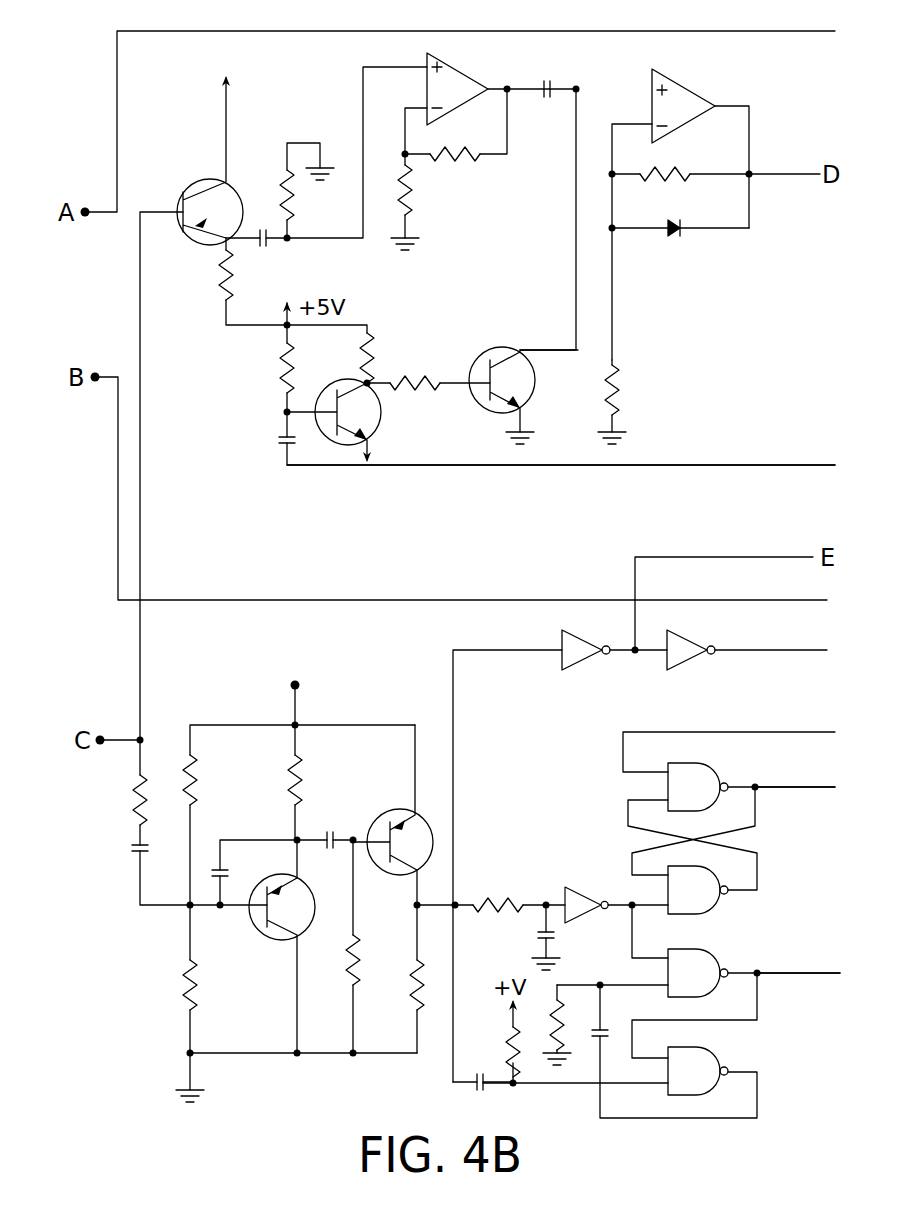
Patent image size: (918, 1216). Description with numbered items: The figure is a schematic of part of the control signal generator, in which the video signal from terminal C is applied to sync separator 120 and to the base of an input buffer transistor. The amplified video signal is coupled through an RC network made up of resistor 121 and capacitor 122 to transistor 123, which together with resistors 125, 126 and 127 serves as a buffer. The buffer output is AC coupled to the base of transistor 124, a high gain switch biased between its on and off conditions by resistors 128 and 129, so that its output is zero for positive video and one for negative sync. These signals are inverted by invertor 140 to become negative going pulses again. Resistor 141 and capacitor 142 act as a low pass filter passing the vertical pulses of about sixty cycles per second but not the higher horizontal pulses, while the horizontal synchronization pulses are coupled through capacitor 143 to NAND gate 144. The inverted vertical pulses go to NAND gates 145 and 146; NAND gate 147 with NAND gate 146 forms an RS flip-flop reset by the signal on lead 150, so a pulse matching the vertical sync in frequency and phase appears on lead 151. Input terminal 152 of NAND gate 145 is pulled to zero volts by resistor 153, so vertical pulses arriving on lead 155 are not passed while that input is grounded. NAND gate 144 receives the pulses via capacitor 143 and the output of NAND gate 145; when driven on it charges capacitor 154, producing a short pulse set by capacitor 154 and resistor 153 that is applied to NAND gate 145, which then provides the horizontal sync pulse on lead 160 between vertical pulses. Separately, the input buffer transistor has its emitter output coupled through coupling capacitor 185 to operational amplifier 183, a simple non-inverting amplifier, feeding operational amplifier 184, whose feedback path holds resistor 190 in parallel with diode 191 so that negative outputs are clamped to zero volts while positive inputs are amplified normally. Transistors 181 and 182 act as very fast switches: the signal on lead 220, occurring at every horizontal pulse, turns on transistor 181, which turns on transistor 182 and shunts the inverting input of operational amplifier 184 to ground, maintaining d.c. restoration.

The sync separator 120 is at (360, 715).
The resistor 121 is at (132, 795).
The capacitor 122 is at (135, 848).
The transistor 123 is at (276, 892).
The transistor 124 is at (400, 809).
The resistor 125 is at (201, 782).
The resistor 126 is at (183, 983).
The resistor 127 is at (306, 776).
The resistor 128 is at (361, 951).
The resistor 129 is at (412, 1000).
The invertor 140 is at (584, 886).
The resistor 141 is at (482, 900).
The capacitor 142 is at (538, 935).
The capacitor 143 is at (472, 1091).
The NAND gate 144 is at (719, 1061).
The NAND gate 145 is at (718, 956).
The NAND gate 146 is at (721, 905).
The NAND gate 147 is at (713, 773).
The lead 150 is at (623, 757).
The lead 151 is at (783, 790).
The input terminal 152 is at (648, 988).
The resistor 153 is at (563, 992).
The capacitor 154 is at (604, 1040).
The lead 155 is at (635, 935).
The lead 160 is at (783, 976).
The transistor 181 is at (348, 378).
The transistor 182 is at (502, 347).
The operational amplifier 183 is at (462, 73).
The operational amplifier 184 is at (686, 88).
The coupling capacitor 185 is at (269, 243).
The resistor 190 is at (676, 172).
The diode 191 is at (672, 237).
The lead 220 is at (715, 467).